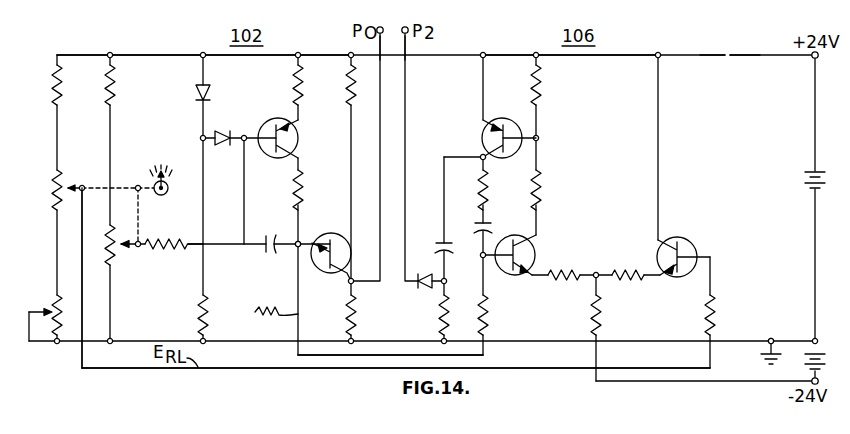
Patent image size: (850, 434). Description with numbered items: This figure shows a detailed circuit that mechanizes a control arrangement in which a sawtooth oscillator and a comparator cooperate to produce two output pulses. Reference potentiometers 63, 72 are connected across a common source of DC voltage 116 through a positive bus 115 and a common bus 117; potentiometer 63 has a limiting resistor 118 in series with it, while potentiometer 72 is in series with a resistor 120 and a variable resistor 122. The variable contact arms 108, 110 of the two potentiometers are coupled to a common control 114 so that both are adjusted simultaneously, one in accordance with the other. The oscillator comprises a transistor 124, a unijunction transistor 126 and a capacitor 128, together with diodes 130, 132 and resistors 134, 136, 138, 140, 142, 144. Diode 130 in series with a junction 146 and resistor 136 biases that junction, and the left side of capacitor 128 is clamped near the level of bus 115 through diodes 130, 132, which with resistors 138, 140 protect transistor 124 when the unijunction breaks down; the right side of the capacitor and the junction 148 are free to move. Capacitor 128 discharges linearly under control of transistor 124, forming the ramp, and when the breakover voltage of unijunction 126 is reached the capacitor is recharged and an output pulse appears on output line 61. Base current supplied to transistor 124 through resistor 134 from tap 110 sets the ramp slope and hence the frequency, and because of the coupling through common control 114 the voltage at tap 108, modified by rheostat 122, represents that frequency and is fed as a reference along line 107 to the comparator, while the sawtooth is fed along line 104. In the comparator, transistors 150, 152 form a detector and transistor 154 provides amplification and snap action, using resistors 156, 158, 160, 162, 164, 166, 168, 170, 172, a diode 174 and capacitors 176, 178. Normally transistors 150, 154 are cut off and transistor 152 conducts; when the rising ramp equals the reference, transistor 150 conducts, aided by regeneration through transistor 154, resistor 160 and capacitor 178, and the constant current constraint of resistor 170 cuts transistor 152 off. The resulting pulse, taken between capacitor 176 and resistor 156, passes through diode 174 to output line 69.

The output line 61 is at (380, 51).
The reference potentiometer 63 is at (105, 236).
The output line 69 is at (405, 51).
The reference potentiometer 72 is at (52, 179).
The line 104 is at (293, 356).
The line 107 is at (247, 368).
The variable contact arm 108 is at (84, 186).
The variable contact arm 110 is at (127, 247).
The common control 114 is at (166, 194).
The positive bus 115 is at (726, 53).
The source of DC voltage 116 is at (802, 180).
The common bus 117 is at (766, 340).
The limiting resistor 118 is at (116, 90).
The resistor 120 is at (64, 90).
The variable resistor 122 is at (50, 308).
The transistor 124 is at (262, 127).
The unijunction transistor 126 is at (322, 237).
The capacitor 128 is at (270, 234).
The diode 130 is at (209, 92).
The diode 132 is at (232, 124).
The resistor 134 is at (168, 242).
The resistor 136 is at (196, 312).
The resistor 138 is at (292, 88).
The resistor 140 is at (304, 184).
The resistor 142 is at (346, 88).
The resistor 144 is at (346, 312).
The junction 146 is at (200, 138).
The junction 148 is at (296, 248).
The transistor 150 is at (508, 238).
The transistor 152 is at (690, 240).
The transistor 154 is at (518, 122).
The resistor 156 is at (440, 315).
The resistor 158 is at (489, 314).
The resistor 160 is at (490, 187).
The resistor 162 is at (543, 92).
The resistor 164 is at (543, 187).
The resistor 166 is at (562, 270).
The resistor 168 is at (625, 270).
The resistor 170 is at (610, 311).
The resistor 172 is at (716, 313).
The diode 174 is at (412, 286).
The capacitor 176 is at (438, 247).
The capacitor 178 is at (476, 227).